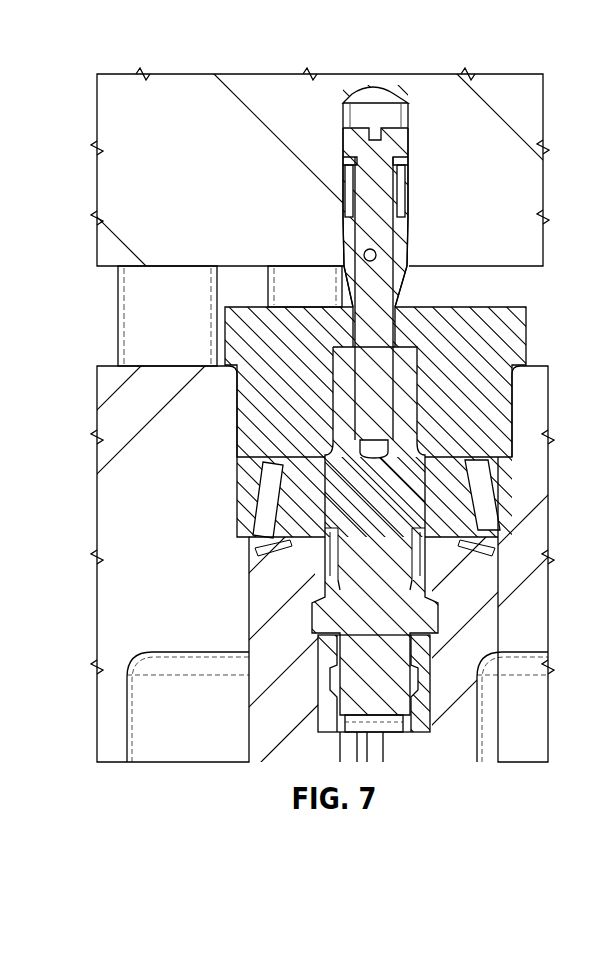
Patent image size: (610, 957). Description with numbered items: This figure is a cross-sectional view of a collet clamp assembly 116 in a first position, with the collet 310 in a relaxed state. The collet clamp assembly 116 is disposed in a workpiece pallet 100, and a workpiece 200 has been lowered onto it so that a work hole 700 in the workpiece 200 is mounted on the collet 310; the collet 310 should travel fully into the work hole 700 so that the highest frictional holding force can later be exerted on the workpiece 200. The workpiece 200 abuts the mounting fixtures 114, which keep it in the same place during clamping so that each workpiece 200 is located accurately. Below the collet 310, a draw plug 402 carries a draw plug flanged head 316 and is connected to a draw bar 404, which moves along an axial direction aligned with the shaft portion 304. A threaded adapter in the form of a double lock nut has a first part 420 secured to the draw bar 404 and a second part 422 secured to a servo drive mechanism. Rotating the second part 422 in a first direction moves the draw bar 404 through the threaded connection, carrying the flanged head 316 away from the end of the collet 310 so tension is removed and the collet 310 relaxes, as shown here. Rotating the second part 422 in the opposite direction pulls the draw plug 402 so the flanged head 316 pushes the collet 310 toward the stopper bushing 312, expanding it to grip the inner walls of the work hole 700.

The workpiece 200 is at (533, 185).
The mounting fixtures 114 is at (130, 342).
The collet clamp assembly 116 is at (536, 333).
The workpiece pallet 100 is at (122, 583).
The draw plug 402 is at (383, 290).
The work hole 700 is at (397, 118).
The draw plug flanged head 316 is at (345, 146).
The collet 310 is at (397, 183).
The shaft portion 304 is at (398, 226).
The stopper bushing 312 is at (347, 292).
The first part of double lock nut 420 is at (425, 652).
The second part of double lock nut 422 is at (420, 713).
The draw bar 404 is at (372, 706).